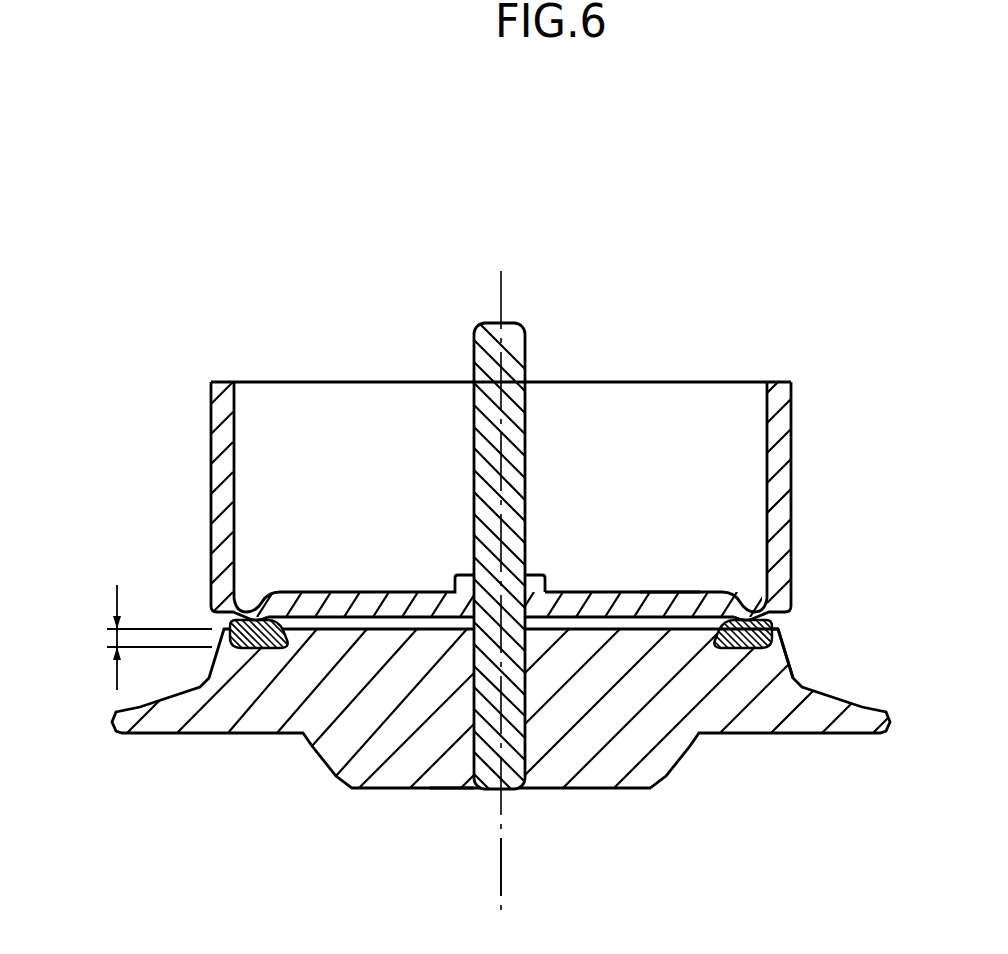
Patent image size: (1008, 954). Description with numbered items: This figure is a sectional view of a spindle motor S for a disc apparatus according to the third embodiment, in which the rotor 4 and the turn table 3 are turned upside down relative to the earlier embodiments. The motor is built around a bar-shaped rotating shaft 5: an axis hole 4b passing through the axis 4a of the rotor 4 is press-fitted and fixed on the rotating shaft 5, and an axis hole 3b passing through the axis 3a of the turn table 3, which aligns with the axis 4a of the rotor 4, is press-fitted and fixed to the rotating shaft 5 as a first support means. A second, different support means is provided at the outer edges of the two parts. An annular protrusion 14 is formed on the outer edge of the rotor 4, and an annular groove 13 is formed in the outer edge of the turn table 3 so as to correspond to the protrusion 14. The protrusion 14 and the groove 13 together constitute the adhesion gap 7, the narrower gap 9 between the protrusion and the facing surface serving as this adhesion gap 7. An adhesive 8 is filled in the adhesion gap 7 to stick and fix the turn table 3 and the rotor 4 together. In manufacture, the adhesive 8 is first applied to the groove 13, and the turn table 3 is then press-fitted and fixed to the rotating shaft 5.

The turn table 3 is at (760, 722).
The axis of the turn table 3a is at (506, 863).
The axis hole of the turn table 3b is at (530, 742).
The rotor 4 is at (455, 501).
The axis of the rotor 4a is at (500, 850).
The axis hole of the rotor 4b is at (452, 585).
The rotating shaft 5 is at (473, 760).
The adhesion gap 7 is at (112, 638).
The adhesive 8 is at (236, 653).
The narrower gap 9 is at (664, 597).
The annular groove 13 is at (740, 717).
The annular protrusion 14 is at (785, 638).
The spindle motor S is at (816, 574).